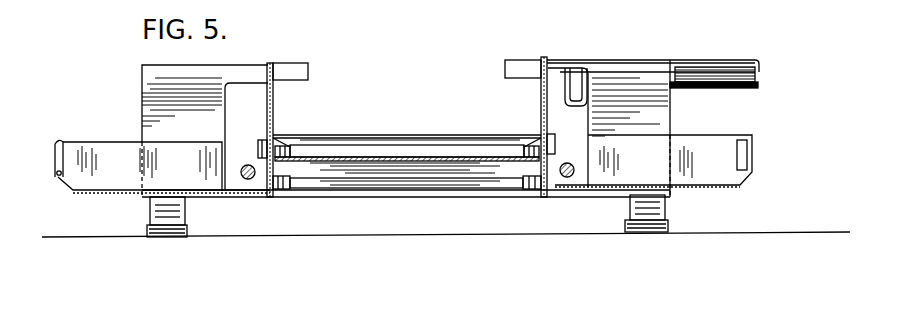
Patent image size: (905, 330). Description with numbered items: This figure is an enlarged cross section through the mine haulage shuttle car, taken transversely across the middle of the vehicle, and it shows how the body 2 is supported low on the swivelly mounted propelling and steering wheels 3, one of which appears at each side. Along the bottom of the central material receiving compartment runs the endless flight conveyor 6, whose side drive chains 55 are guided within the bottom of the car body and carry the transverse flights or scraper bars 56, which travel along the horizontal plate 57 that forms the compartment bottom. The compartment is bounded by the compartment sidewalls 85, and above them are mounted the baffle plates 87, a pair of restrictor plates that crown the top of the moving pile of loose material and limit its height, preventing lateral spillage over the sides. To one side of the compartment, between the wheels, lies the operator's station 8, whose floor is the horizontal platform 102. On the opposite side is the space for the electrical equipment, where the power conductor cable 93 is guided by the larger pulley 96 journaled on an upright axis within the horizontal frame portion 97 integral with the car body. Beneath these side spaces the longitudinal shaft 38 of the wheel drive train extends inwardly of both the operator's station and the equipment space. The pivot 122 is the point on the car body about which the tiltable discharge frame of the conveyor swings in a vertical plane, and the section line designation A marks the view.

The body 2 is at (662, 191).
The propelling and steering wheels 3 is at (155, 232).
The endless flight conveyor 6 is at (320, 147).
The operator's station 8 is at (177, 158).
The longitudinal shaft 38 is at (246, 181).
The side drive chains 55 is at (269, 190).
The scraper bars 56 is at (352, 152).
The horizontal plate 57 is at (432, 154).
The compartment sidewalls 85 is at (273, 109).
The baffle plates 87 is at (292, 70).
The power conductor cable 93 is at (758, 72).
The pulley 96 is at (758, 84).
The horizontal frame portion 97 is at (755, 62).
The horizontal platform 102 is at (121, 191).
The pivot 122 is at (261, 147).
The assembly A is at (522, 87).